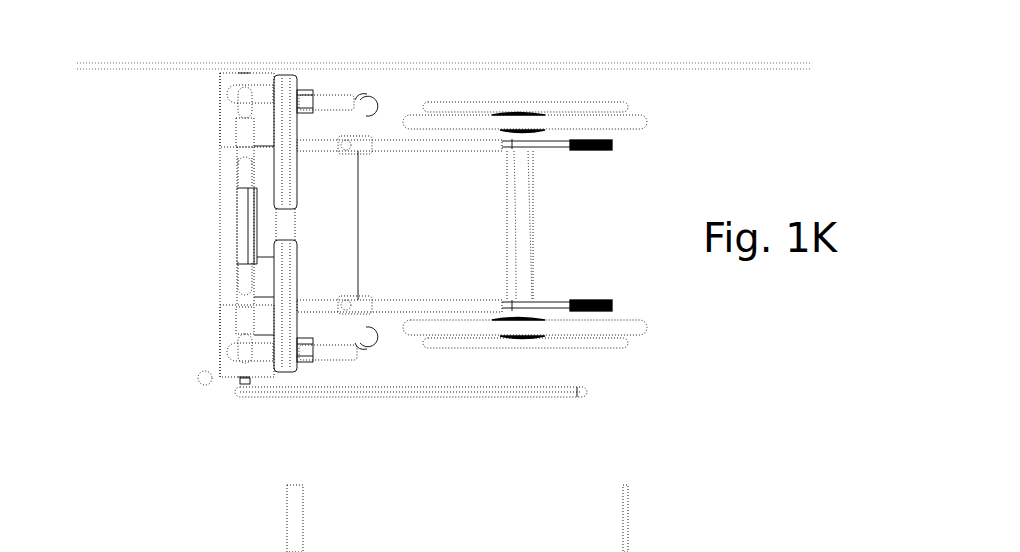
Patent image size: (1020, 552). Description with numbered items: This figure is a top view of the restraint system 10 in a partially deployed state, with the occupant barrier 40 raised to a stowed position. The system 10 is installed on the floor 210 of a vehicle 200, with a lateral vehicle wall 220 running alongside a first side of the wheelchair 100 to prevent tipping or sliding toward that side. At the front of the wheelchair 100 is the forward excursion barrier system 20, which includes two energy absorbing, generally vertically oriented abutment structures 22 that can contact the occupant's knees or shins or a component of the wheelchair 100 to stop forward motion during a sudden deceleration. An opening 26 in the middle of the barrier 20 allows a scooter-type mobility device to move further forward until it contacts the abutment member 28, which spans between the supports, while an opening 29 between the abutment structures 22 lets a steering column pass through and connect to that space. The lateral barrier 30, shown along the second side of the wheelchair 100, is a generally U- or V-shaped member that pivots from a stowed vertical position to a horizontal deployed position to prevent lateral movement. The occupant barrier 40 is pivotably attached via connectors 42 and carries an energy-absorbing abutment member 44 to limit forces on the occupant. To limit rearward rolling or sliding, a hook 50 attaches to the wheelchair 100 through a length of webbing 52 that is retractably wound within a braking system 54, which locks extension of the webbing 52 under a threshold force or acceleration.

The system 10 is at (190, 298).
The forward excursion barrier system 20 is at (228, 395).
The abutment structures 22 is at (288, 73).
The opening 26 is at (265, 210).
The abutment member 28 is at (220, 225).
The opening 29 is at (288, 225).
The lateral barrier 30 is at (590, 393).
The occupant barrier 40 is at (233, 128).
The connectors 42 is at (247, 72).
The abutment member 44 is at (240, 203).
The hook 50 is at (380, 110).
The webbing 52 is at (335, 97).
The braking system 54 is at (307, 97).
The wheelchair 100 is at (657, 123).
The vehicle 200 is at (112, 50).
The floor 210 is at (765, 182).
The vehicle wall 220 is at (663, 62).